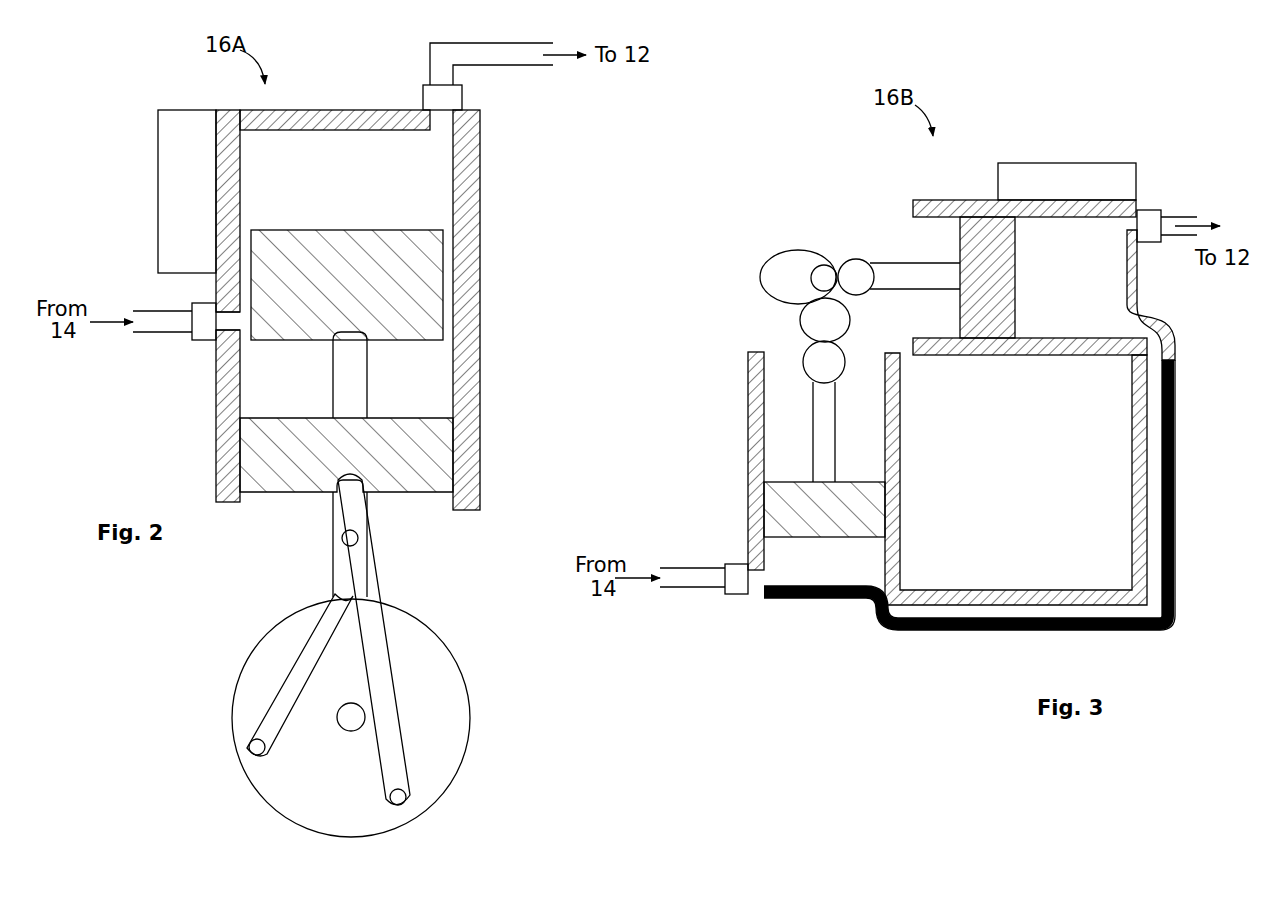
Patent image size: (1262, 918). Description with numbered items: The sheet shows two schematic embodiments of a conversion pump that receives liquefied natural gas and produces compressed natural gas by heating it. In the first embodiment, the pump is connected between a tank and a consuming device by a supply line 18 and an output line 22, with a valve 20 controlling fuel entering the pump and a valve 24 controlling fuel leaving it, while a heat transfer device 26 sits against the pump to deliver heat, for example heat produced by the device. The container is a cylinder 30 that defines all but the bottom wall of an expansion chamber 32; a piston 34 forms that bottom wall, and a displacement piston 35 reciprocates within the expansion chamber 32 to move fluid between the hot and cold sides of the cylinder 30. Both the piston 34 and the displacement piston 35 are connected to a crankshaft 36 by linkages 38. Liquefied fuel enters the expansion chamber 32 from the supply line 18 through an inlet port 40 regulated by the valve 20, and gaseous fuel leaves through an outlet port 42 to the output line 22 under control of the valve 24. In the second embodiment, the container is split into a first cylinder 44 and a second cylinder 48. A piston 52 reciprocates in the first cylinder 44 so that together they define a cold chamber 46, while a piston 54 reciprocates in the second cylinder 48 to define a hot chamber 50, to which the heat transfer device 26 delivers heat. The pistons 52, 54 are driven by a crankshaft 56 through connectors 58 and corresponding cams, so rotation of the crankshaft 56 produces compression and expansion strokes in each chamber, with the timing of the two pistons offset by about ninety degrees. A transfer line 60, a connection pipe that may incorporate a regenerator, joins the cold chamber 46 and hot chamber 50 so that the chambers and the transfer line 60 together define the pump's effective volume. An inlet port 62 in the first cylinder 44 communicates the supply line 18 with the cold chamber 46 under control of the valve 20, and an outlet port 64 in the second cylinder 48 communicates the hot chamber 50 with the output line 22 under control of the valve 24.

In FIG. 2, the supply line 18 is at (150, 361).
In FIG. 3, the supply line 18 is at (680, 614).
In FIG. 2, the valve 20 is at (165, 303).
In FIG. 3, the valve 20 is at (706, 631).
In FIG. 2, the output line 22 is at (449, 74).
In FIG. 3, the output line 22 is at (1182, 184).
In FIG. 2, the valve 24 is at (522, 93).
In FIG. 3, the valve 24 is at (1151, 176).
In FIG. 2, the heat transfer device 26 is at (150, 191).
In FIG. 3, the heat transfer device 26 is at (1067, 136).
In FIG. 2, the cylinder 30 is at (420, 310).
In FIG. 2, the expansion chamber 32 is at (416, 271).
In FIG. 2, the piston 34 is at (408, 440).
In FIG. 2, the displacement piston 35 is at (457, 374).
In FIG. 2, the crankshaft 36 is at (351, 719).
In FIG. 2, the linkages 38 is at (338, 639).
In FIG. 2, the inlet port 40 is at (201, 365).
In FIG. 2, the outlet port 42 is at (506, 144).
In FIG. 3, the first cylinder 44 is at (900, 510).
In FIG. 3, the cold chamber 46 is at (781, 503).
In FIG. 3, the second cylinder 48 is at (1030, 387).
In FIG. 3, the hot chamber 50 is at (1090, 293).
In FIG. 3, the piston 52 is at (824, 475).
In FIG. 3, the piston 54 is at (968, 200).
In FIG. 3, the crankshaft 56 is at (817, 252).
In FIG. 3, the connectors 58 is at (837, 397).
In FIG. 3, the transfer line 60 is at (969, 522).
In FIG. 3, the inlet port 62 is at (714, 557).
In FIG. 3, the outlet port 64 is at (1159, 271).